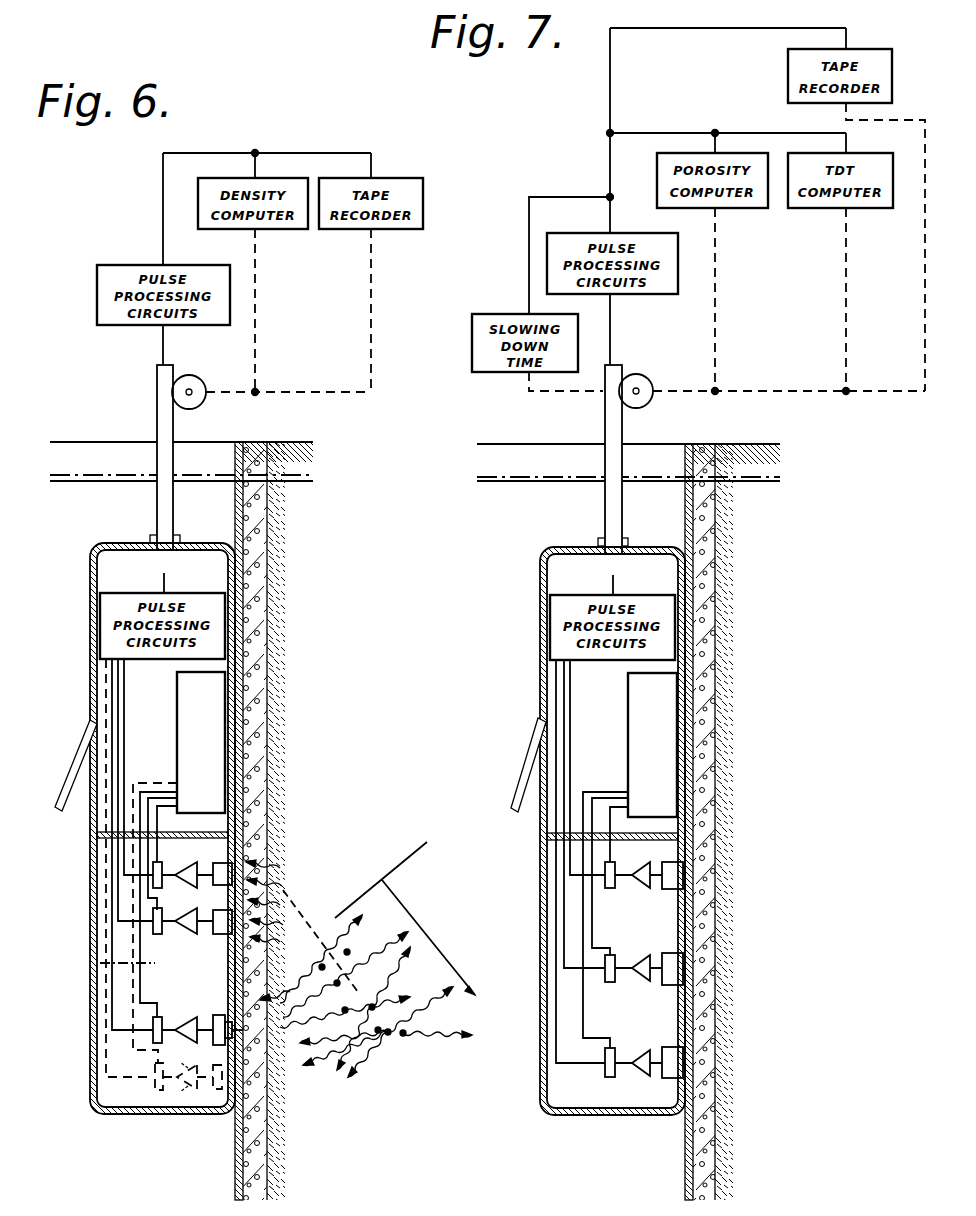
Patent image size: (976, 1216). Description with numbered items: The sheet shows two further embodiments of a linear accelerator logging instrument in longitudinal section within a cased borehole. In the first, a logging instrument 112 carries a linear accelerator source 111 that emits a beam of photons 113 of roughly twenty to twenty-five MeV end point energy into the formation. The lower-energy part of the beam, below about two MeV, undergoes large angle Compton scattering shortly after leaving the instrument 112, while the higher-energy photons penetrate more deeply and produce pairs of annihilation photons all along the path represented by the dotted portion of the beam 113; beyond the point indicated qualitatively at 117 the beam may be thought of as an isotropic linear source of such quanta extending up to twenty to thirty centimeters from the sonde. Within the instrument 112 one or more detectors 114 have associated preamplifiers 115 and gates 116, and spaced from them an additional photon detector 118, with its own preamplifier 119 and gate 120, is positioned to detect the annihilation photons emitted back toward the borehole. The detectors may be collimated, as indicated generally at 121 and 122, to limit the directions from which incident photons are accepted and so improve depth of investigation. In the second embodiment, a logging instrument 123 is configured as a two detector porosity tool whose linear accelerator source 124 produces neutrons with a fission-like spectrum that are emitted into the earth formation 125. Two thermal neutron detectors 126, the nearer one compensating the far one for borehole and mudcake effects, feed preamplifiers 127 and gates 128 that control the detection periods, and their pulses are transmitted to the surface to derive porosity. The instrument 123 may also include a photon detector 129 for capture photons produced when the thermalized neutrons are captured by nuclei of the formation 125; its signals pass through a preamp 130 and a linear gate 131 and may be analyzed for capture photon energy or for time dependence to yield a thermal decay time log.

In FIG. 6, the linear accelerator source 111 is at (180, 735).
In FIG. 6, the logging instrument 112 is at (93, 552).
In FIG. 6, the beam of photons 113 is at (395, 1037).
In FIG. 6, the detectors 114 is at (214, 935).
In FIG. 6, the preamplifiers 115 is at (170, 920).
In FIG. 6, the gates 116 is at (166, 866).
In FIG. 6, the point on beam path 117 is at (403, 850).
In FIG. 6, the additional photon detector 118 is at (213, 1018).
In FIG. 6, the preamplifier 119 is at (128, 1090).
In FIG. 6, the gate 120 is at (158, 1090).
In FIG. 6, the collimation 121 is at (240, 1085).
In FIG. 6, the collimation 122 is at (223, 1013).
In FIG. 7, the logging instrument 123 is at (540, 577).
In FIG. 7, the linear accelerator source 124 is at (632, 724).
In FIG. 7, the earth formation 125 is at (733, 870).
In FIG. 7, the thermal neutron detectors 126 is at (672, 890).
In FIG. 7, the preamplifiers 127 is at (638, 885).
In FIG. 7, the gates 128 is at (607, 960).
In FIG. 7, the photon detector 129 is at (673, 1079).
In FIG. 7, the preamp 130 is at (636, 1048).
In FIG. 7, the linear gate 131 is at (608, 1078).